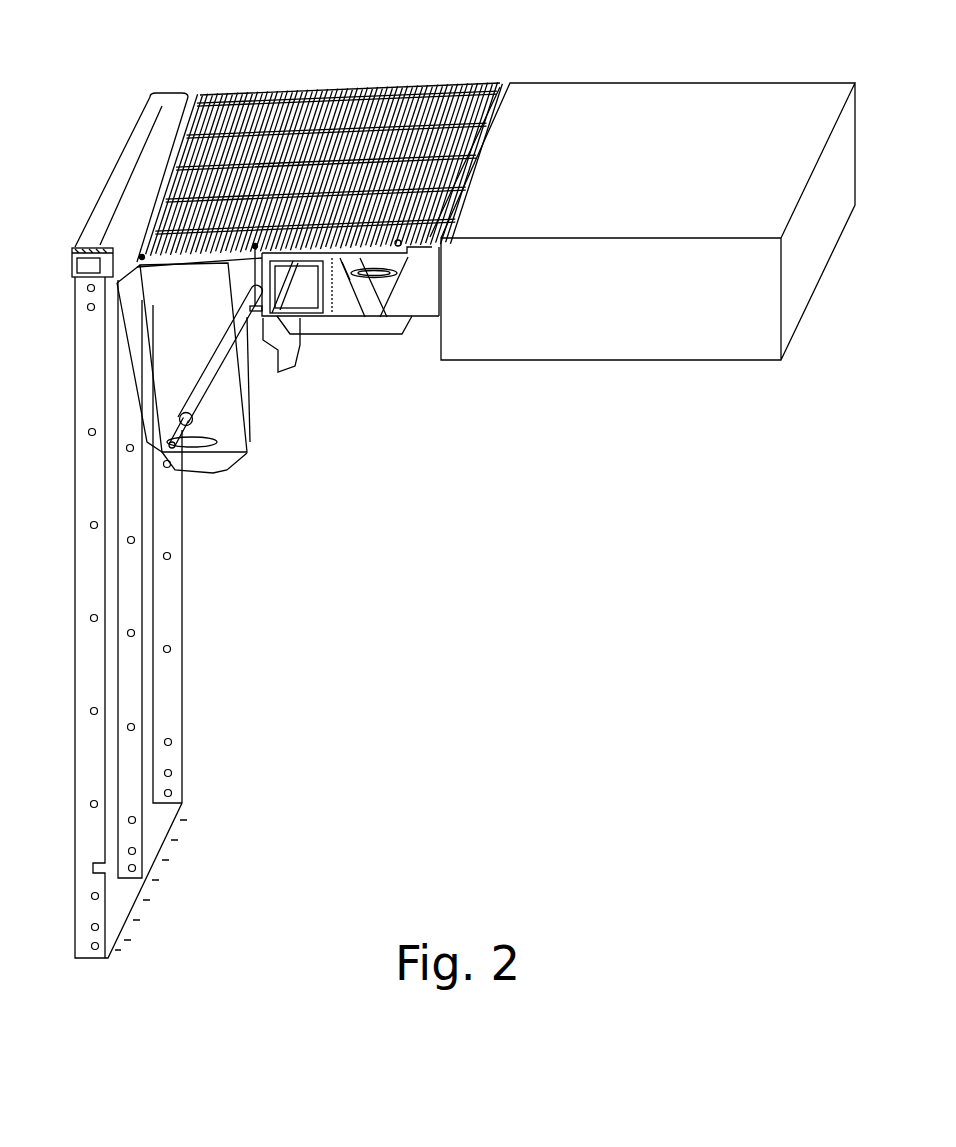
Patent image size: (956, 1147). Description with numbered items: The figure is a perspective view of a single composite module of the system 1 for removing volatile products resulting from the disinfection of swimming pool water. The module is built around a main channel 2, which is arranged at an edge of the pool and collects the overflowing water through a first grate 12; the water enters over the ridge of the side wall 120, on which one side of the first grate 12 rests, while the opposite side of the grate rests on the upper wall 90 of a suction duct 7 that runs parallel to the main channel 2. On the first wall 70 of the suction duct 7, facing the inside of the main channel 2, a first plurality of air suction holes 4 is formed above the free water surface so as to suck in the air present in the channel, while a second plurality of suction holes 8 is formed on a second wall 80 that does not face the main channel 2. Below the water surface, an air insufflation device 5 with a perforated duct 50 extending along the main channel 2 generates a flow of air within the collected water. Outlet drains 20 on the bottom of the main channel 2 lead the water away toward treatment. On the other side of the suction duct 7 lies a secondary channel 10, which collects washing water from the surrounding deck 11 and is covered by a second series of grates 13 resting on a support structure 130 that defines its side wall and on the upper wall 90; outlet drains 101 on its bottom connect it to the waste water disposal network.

The system for the removal of products resulting from the disinfection of water 1 is at (742, 813).
The main channel 2 is at (227, 437).
The air suction holes 4 is at (283, 258).
The air insufflation device 5 is at (212, 392).
The suction duct 7 is at (350, 278).
The second plurality of suction holes 8 is at (343, 270).
The secondary channel 10 is at (366, 313).
The deck 11 is at (583, 293).
The first grate 12 is at (217, 97).
The second series of grates 13 is at (453, 85).
The outlet drains 20 is at (255, 244).
The perforated duct 50 is at (213, 377).
The first wall 70 is at (312, 299).
The second wall 80 is at (330, 289).
The upper wall 90 is at (307, 257).
The outlet drains 101 is at (374, 268).
The side wall 120 is at (130, 277).
The support structure 130 is at (441, 261).